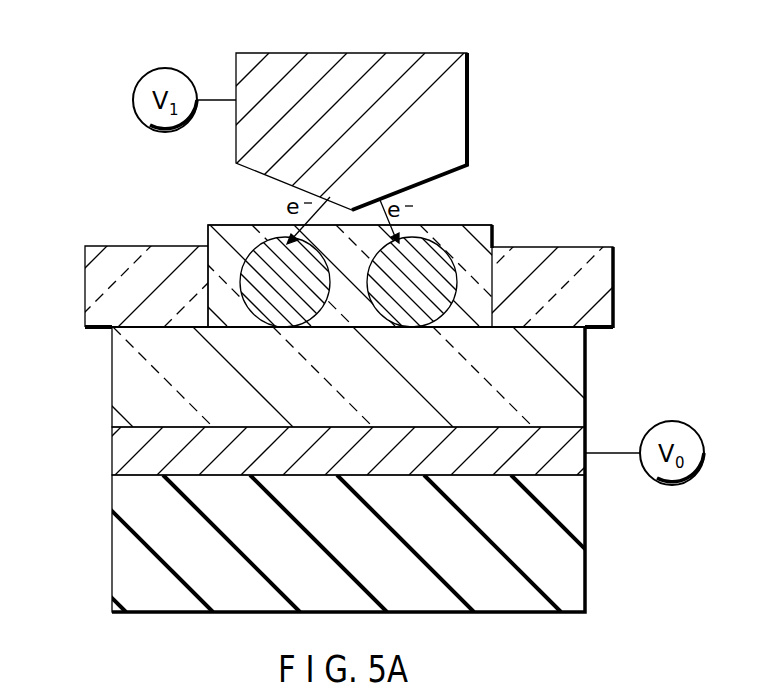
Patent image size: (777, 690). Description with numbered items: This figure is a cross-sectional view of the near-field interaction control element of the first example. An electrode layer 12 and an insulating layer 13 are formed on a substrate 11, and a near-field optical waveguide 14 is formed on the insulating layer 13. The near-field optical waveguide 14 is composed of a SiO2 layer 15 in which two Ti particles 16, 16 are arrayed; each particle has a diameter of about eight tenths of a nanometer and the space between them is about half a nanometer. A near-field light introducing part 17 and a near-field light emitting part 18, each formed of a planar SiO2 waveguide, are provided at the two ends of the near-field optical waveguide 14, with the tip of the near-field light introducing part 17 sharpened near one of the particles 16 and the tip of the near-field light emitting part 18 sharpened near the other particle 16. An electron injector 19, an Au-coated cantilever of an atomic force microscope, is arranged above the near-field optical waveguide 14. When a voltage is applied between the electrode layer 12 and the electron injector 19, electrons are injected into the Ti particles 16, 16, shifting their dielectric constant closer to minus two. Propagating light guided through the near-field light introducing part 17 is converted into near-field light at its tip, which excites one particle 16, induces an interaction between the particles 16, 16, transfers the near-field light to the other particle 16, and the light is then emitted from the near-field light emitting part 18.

The substrate 11 is at (574, 557).
The electrode layer 12 is at (120, 452).
The insulating layer 13 is at (576, 372).
The near-field optical waveguide 14 is at (472, 219).
The SiO2 layer 15 is at (208, 224).
The Ti particles 16 is at (265, 238).
The near-field light introducing part 17 is at (92, 284).
The near-field light emitting part 18 is at (604, 283).
The electron injector 19 is at (431, 70).